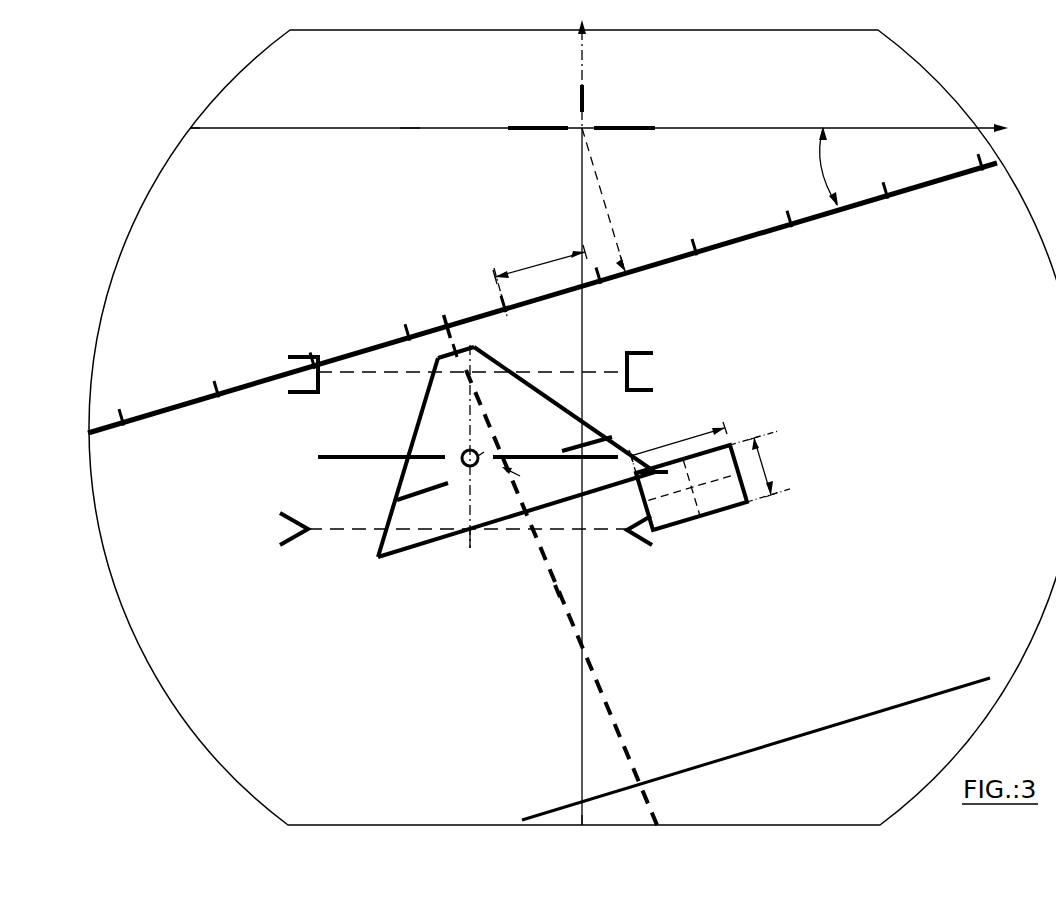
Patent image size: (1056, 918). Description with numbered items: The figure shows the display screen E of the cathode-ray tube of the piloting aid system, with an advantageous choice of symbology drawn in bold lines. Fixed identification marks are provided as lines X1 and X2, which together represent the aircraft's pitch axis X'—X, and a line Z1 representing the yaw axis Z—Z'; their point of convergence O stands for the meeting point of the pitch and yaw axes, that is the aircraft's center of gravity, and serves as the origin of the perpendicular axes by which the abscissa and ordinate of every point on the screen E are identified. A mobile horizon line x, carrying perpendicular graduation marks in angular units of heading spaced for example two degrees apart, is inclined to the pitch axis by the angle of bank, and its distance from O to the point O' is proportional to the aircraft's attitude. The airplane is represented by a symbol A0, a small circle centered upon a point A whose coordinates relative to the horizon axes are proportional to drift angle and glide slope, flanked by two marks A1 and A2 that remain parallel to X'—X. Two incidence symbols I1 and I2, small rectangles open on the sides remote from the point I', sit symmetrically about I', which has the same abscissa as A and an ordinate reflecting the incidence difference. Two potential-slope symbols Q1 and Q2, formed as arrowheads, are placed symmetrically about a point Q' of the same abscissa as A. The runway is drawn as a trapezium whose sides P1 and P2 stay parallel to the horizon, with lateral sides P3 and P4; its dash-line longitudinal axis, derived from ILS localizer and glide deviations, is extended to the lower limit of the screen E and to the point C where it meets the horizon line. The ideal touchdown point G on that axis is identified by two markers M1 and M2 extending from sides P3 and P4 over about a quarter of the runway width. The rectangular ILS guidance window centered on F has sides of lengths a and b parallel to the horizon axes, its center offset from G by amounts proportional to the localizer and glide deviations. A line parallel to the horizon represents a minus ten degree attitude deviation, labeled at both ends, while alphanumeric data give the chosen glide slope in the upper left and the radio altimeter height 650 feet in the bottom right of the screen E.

The display screen E is at (937, 84).
The pitch axis end X is at (607, 129).
The pitch axis end X' is at (181, 128).
The yaw axis end Z is at (591, 413).
The yaw axis end Z' is at (595, 835).
The point of convergence O is at (603, 199).
The horizon origin point O' is at (636, 253).
The fixed identification mark X1 is at (540, 118).
The fixed identification mark X2 is at (650, 126).
The fixed yaw axis mark Z1 is at (590, 100).
The mobile horizon line x is at (542, 293).
The runway trapezium side P1 is at (416, 552).
The runway trapezium side P2 is at (460, 352).
The runway trapezium side P3 is at (566, 390).
The runway trapezium side P4 is at (395, 483).
The intercept point C is at (445, 326).
The incidence symbol I1 is at (300, 394).
The incidence symbol I2 is at (647, 353).
The incidence reference point I' is at (561, 584).
The airplane symbol center A is at (462, 452).
The airplane symbol A0 is at (481, 454).
The flanking mark A1 is at (346, 456).
The flanking mark A2 is at (527, 456).
The ideal touchdown point G is at (522, 480).
The touchdown marker M1 is at (427, 495).
The touchdown marker M2 is at (598, 440).
The potential-slope symbol Q1 is at (293, 547).
The potential-slope symbol Q2 is at (641, 548).
The potential-slope reference point Q' is at (482, 550).
The guidance window center F is at (691, 487).
The guidance window side length a is at (678, 447).
The guidance window side length b is at (761, 466).
The radio altimeter height value 650 is at (832, 615).